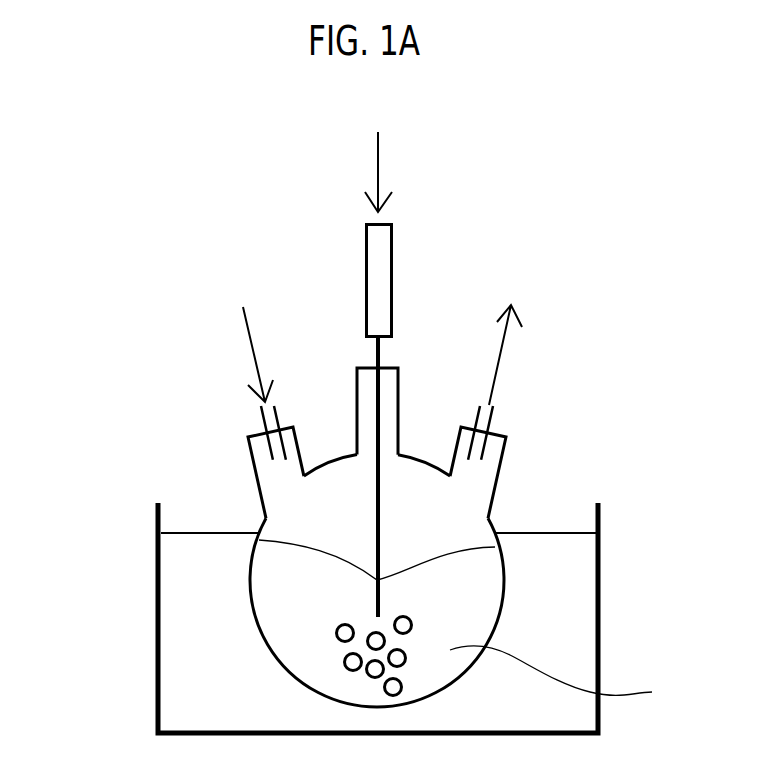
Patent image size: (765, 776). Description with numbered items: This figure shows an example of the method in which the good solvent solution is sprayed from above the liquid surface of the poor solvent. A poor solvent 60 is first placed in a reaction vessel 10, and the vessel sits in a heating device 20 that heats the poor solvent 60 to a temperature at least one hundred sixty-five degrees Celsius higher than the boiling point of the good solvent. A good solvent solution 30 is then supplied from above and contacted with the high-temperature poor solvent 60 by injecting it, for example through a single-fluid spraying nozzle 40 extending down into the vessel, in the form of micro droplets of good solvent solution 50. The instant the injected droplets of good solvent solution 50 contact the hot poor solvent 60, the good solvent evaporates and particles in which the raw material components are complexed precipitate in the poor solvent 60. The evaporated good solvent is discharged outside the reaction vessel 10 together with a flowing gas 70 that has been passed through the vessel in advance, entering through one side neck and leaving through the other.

The reaction vessel 10 is at (254, 568).
The heating device 20 is at (156, 612).
The good solvent solution 30 is at (377, 162).
The single-fluid spraying nozzle 40 is at (377, 498).
The droplets of good solvent solution 50 is at (405, 620).
The poor solvent 60 is at (565, 672).
The flowing gas 70 is at (246, 323).